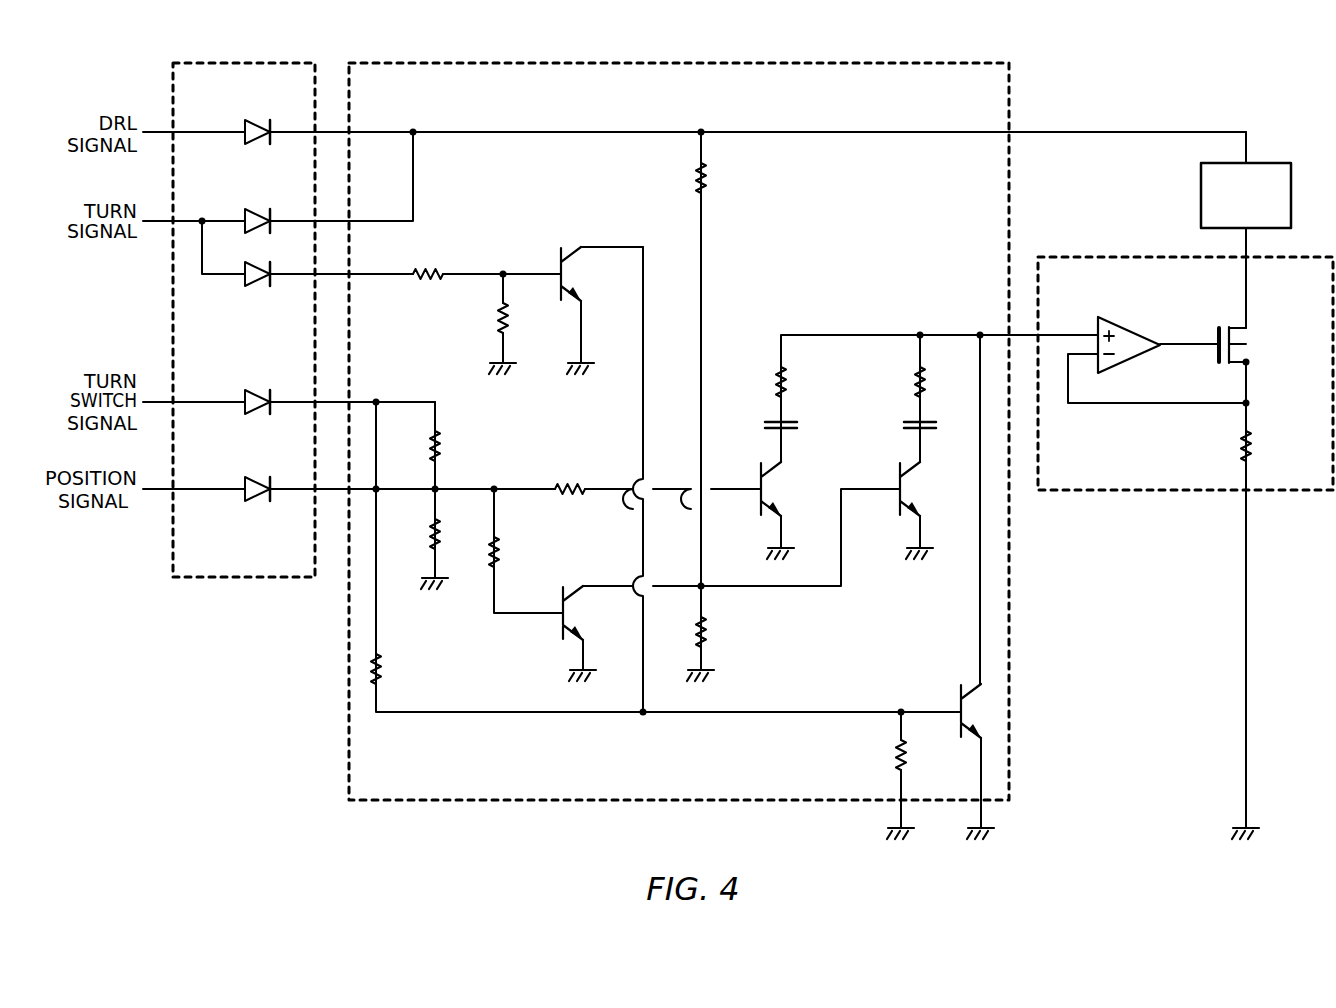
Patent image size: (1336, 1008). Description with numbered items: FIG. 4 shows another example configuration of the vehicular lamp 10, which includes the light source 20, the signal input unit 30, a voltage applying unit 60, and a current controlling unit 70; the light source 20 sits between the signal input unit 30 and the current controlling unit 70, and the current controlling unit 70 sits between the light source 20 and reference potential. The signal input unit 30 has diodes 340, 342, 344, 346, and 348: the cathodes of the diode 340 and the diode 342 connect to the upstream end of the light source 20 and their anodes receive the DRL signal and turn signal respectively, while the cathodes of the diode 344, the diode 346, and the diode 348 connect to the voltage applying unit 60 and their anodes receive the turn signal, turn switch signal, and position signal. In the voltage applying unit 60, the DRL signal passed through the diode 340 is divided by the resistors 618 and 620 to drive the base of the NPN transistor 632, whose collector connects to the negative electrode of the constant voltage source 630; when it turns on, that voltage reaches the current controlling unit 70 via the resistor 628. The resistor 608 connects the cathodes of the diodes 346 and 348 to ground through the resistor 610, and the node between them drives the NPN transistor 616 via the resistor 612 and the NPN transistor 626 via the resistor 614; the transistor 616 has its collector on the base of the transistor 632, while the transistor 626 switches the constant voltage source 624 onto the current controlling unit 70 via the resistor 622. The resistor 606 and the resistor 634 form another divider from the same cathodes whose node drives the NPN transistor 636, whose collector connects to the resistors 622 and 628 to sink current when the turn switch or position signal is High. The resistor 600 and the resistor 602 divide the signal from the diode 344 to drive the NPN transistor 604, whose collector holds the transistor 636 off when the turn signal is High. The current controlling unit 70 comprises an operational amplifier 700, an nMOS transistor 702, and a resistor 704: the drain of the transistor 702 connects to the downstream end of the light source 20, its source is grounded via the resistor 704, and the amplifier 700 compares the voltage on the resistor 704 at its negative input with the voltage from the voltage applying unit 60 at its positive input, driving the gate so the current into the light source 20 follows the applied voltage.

The vehicular lamp 10 is at (1276, 85).
The light source 20 is at (1200, 195).
The signal input unit 30 is at (251, 580).
The voltage applying unit 60 is at (1014, 691).
The current controlling unit 70 is at (1153, 492).
The diode 340 is at (262, 121).
The diode 342 is at (262, 208).
The diode 344 is at (258, 286).
The diode 346 is at (258, 414).
The diode 348 is at (258, 504).
The resistor 600 is at (427, 266).
The resistor 602 is at (497, 318).
The NPN transistor 604 is at (574, 276).
The resistor 606 is at (384, 669).
The resistor 608 is at (441, 446).
The resistor 610 is at (441, 542).
The resistor 612 is at (501, 552).
The resistor 614 is at (570, 484).
The NPN transistor 616 is at (581, 617).
The resistor 618 is at (705, 179).
The resistor 620 is at (708, 627).
The resistor 622 is at (773, 381).
The constant voltage source 624 is at (773, 419).
The NPN transistor 626 is at (757, 510).
The resistor 628 is at (909, 381).
The constant voltage source 630 is at (909, 419).
The NPN transistor 632 is at (896, 475).
The resistor 634 is at (895, 754).
The NPN transistor 636 is at (950, 693).
The operational amplifier 700 is at (1130, 330).
The nMOS transistor 702 is at (1256, 345).
The resistor 704 is at (1258, 446).